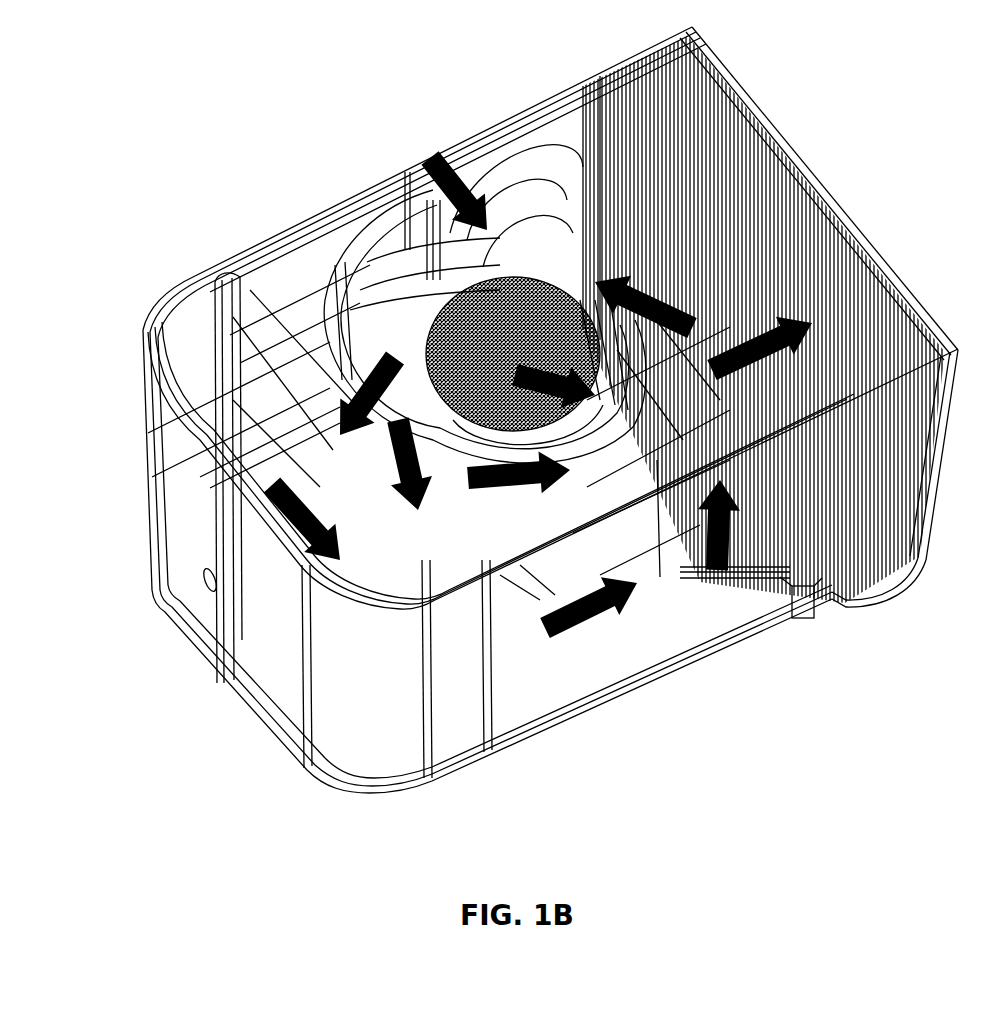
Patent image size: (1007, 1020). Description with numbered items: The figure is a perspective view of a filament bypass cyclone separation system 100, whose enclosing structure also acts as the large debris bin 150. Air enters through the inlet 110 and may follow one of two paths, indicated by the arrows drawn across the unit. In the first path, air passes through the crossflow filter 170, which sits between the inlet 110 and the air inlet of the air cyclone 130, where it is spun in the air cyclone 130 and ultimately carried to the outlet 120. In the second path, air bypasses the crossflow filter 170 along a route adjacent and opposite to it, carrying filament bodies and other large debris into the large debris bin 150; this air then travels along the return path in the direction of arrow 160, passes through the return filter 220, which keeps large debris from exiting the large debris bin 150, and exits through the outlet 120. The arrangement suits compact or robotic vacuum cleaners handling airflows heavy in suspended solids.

The filament bypass cyclone separation system 100 is at (501, 24).
The inlet 110 is at (510, 233).
The outlet 120 is at (860, 278).
The air cyclone 130 is at (425, 205).
The large debris bin 150 is at (180, 377).
The return path 160 is at (723, 580).
The crossflow filter 170 is at (232, 300).
The return filter 220 is at (790, 593).